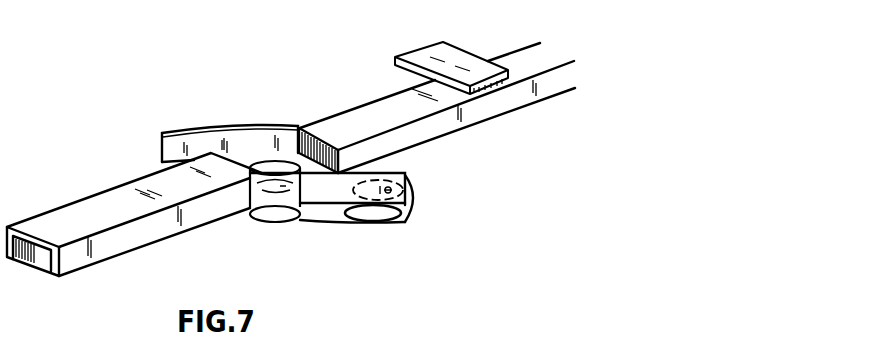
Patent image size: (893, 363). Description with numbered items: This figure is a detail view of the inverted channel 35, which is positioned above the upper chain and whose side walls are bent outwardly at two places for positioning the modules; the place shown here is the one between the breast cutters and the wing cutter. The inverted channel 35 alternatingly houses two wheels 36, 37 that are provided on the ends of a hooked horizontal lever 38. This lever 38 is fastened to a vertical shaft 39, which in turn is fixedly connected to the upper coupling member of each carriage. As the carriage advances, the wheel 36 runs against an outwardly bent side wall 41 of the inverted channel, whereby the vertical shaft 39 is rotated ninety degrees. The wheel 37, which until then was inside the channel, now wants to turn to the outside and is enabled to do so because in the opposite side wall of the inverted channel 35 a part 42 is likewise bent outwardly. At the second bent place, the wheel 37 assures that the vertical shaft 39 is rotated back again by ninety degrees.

The inverted channel 35 is at (102, 208).
The wheel 36 is at (417, 194).
The wheel 37 is at (421, 138).
The hooked horizontal lever 38 is at (319, 148).
The vertical shaft 39 is at (274, 170).
The outwardly bent side wall 41 is at (337, 190).
The outwardly bent part 42 is at (177, 147).